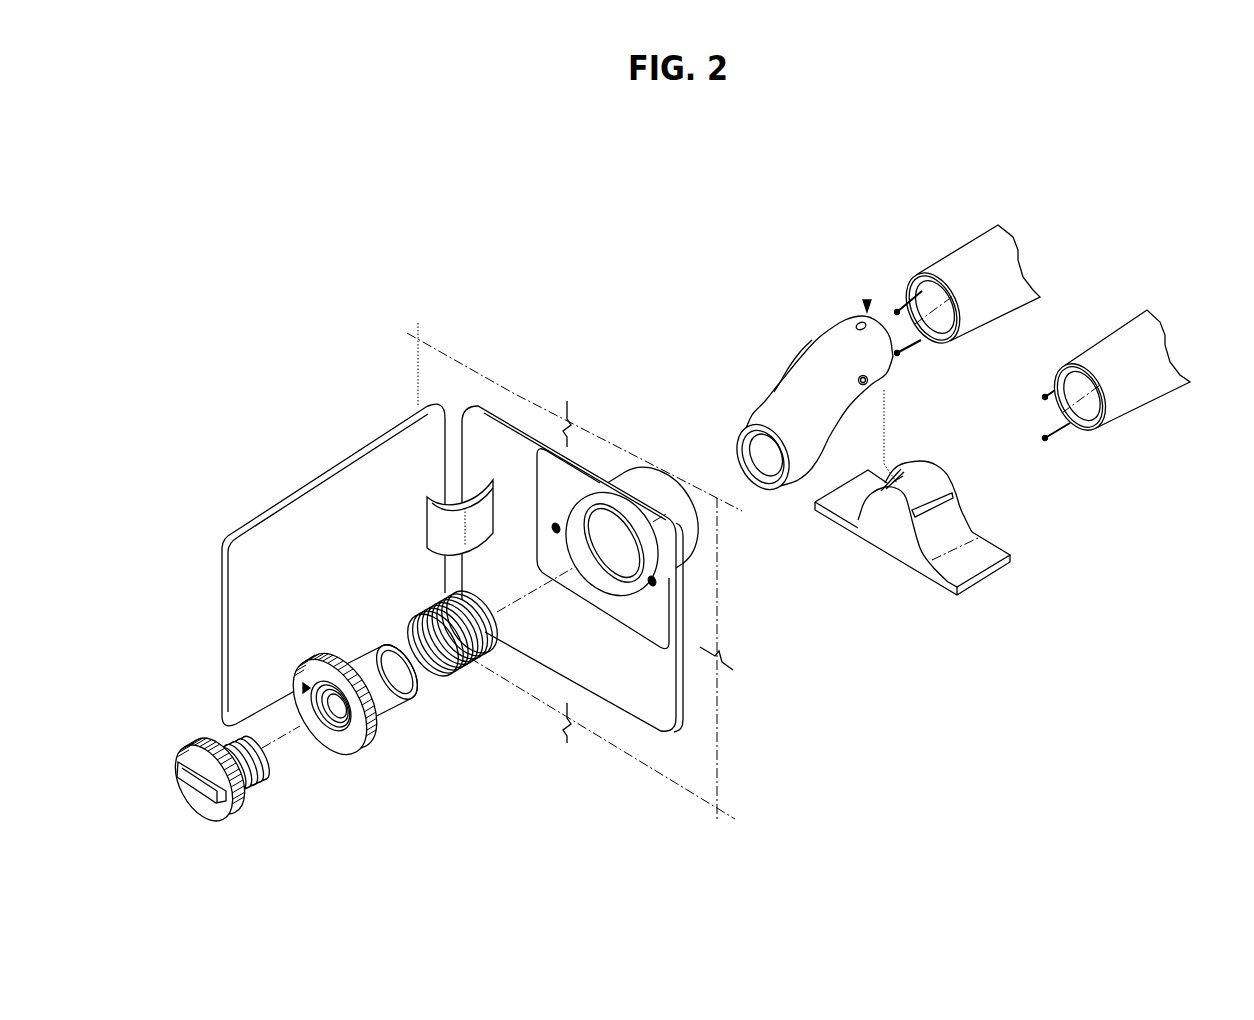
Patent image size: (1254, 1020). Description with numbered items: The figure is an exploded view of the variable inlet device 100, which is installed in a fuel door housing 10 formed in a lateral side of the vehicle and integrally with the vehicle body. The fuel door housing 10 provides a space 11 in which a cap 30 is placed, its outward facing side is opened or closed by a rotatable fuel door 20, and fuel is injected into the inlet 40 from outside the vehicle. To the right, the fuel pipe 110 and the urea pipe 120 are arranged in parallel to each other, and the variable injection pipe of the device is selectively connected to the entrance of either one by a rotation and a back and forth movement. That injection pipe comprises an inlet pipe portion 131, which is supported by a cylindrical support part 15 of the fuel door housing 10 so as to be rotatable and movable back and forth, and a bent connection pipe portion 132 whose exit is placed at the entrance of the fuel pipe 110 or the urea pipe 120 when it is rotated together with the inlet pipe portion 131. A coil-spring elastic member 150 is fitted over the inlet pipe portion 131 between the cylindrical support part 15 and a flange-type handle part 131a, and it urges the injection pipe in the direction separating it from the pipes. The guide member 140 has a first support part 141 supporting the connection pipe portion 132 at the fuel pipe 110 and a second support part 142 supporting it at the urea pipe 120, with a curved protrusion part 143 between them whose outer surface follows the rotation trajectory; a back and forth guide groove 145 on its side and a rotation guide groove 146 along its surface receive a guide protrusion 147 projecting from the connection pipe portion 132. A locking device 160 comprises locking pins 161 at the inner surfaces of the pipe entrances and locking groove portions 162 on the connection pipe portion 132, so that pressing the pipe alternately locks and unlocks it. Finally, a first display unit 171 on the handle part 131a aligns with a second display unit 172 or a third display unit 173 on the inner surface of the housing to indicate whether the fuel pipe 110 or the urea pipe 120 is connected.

The fuel door housing 10 is at (506, 416).
The space 11 is at (626, 686).
The cylindrical support part 15 is at (636, 488).
The fuel door 20 is at (294, 492).
The cap 30 is at (212, 812).
The inlet 40 is at (322, 722).
The variable inlet device 100 is at (642, 201).
The fuel pipe 110 is at (968, 262).
The urea pipe 120 is at (1137, 400).
The inlet pipe portion 131 is at (385, 710).
The handle part 131a is at (348, 745).
The connection pipe portion 132 is at (818, 348).
The guide member 140 is at (924, 581).
The first support part 141 is at (834, 510).
The second support part 142 is at (975, 558).
The curved protrusion part 143 is at (930, 466).
The back and forth guide groove 145 is at (944, 505).
The rotation guide groove 146 is at (893, 482).
The guide protrusion 147 is at (863, 386).
The elastic member 150 is at (424, 621).
The locking device 160 is at (867, 300).
The locking pin 161 is at (1052, 432).
The locking groove portion 162 is at (856, 321).
The first display unit 171 is at (301, 688).
The second display unit 172 is at (559, 524).
The third display unit 173 is at (656, 585).